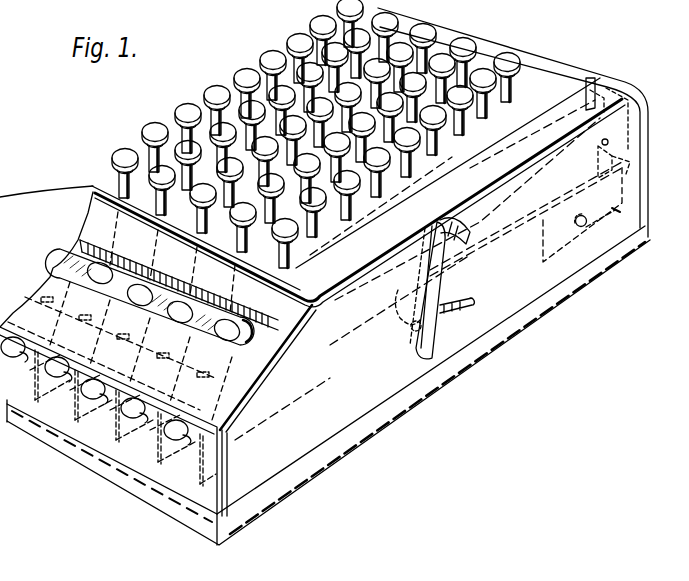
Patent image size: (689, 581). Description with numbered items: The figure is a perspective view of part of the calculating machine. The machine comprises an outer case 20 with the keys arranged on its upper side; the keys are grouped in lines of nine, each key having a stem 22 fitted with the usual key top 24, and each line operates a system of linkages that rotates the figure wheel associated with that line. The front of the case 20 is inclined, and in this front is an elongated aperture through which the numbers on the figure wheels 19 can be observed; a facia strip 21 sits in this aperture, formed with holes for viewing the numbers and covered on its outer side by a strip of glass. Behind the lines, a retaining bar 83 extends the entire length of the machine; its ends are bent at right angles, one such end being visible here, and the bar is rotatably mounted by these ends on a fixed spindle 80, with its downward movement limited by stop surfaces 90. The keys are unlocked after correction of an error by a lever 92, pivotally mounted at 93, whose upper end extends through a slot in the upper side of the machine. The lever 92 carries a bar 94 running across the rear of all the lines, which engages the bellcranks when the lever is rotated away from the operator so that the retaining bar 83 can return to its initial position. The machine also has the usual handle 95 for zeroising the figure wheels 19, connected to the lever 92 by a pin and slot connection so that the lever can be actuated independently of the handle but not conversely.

The figure wheels 19 is at (250, 340).
The outer case 20 is at (553, 82).
The facia strip 21 is at (69, 259).
The stem 22 is at (122, 184).
The key top 24 is at (288, 134).
The fixed spindle 80 is at (586, 229).
The retaining bar 83 is at (594, 210).
The stop surfaces 90 is at (592, 213).
The lever 92 is at (600, 90).
The pivot 93 is at (626, 100).
The bar 94 is at (602, 160).
The handle 95 is at (458, 300).